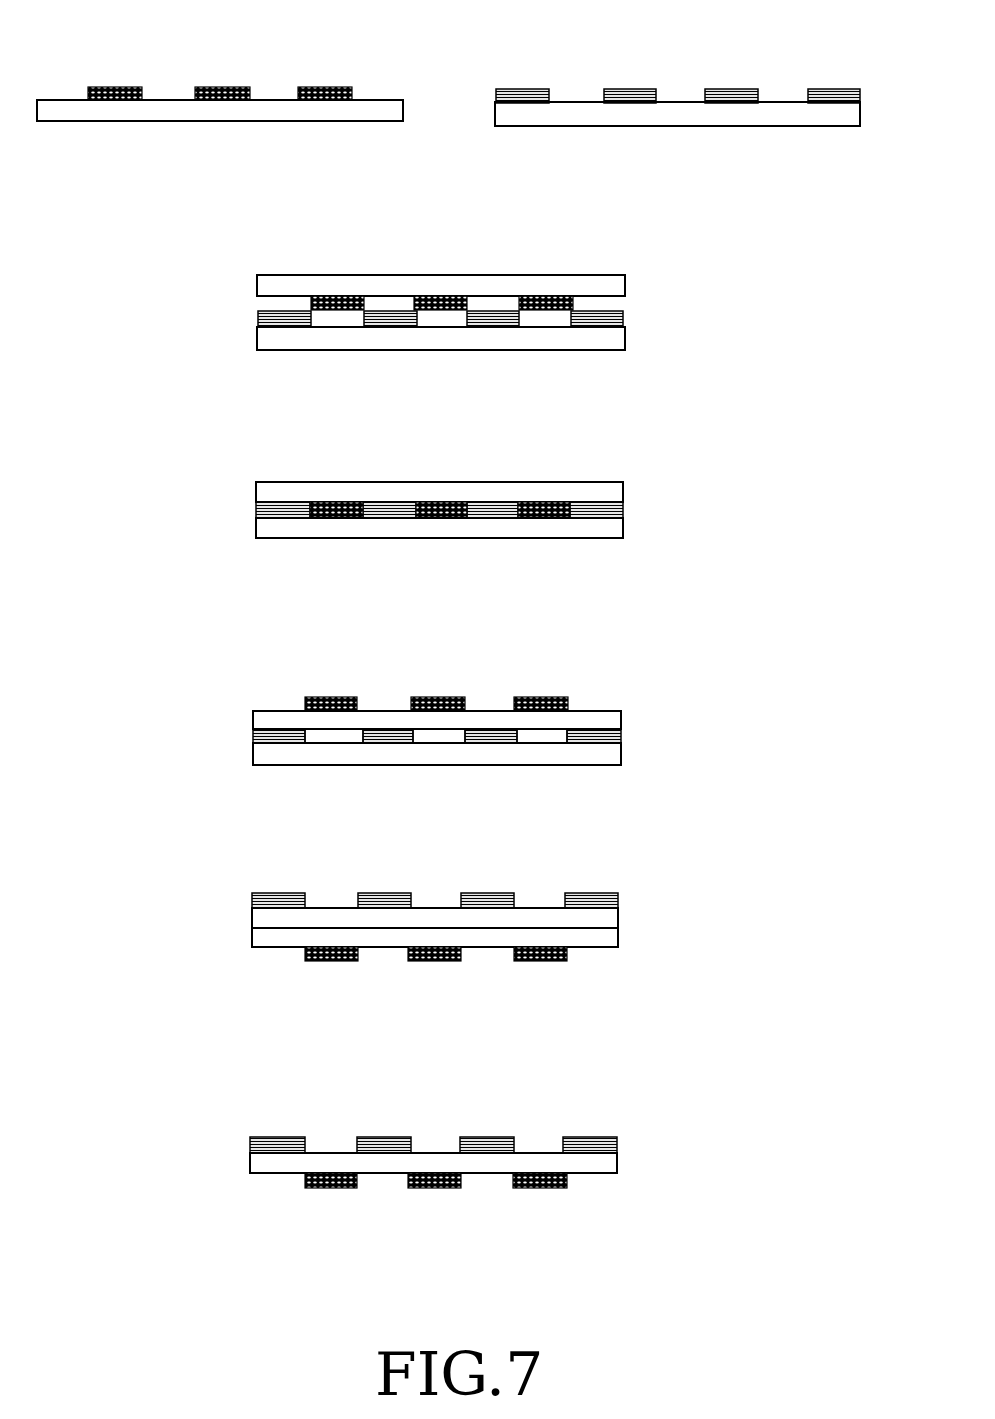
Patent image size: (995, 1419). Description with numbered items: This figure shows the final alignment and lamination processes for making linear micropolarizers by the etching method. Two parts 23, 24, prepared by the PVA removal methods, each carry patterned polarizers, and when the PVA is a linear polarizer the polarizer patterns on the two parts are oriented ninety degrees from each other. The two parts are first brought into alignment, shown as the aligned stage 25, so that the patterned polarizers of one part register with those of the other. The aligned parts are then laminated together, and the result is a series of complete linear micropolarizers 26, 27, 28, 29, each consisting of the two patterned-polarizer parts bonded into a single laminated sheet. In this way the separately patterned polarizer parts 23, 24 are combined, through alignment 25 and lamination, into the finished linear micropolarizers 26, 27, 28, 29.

The part with patterned polarizers 23 is at (122, 80).
The part with patterned polarizers 24 is at (576, 100).
The aligned parts 25 is at (248, 331).
The complete linear micropolarizer 26 is at (238, 505).
The complete linear micropolarizer 27 is at (240, 749).
The complete linear micropolarizer 28 is at (242, 925).
The complete linear micropolarizer 29 is at (237, 1157).